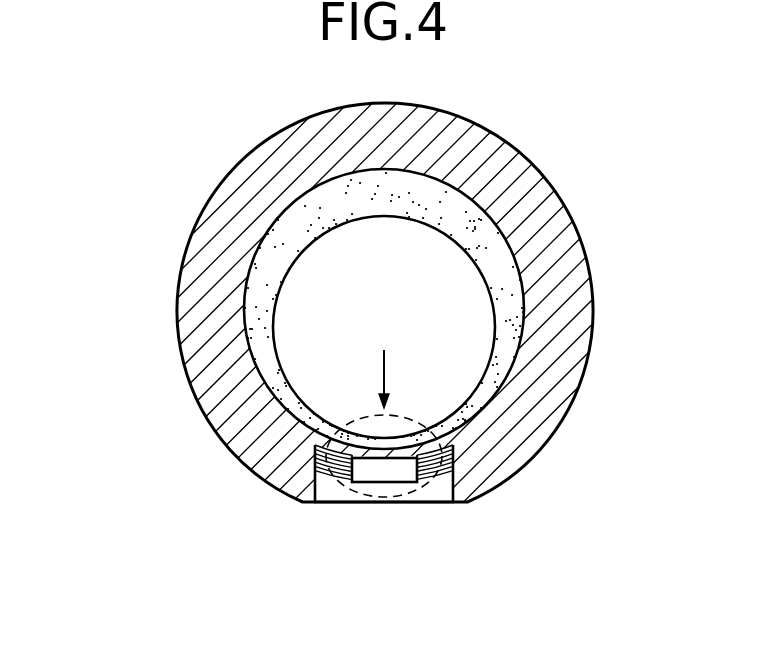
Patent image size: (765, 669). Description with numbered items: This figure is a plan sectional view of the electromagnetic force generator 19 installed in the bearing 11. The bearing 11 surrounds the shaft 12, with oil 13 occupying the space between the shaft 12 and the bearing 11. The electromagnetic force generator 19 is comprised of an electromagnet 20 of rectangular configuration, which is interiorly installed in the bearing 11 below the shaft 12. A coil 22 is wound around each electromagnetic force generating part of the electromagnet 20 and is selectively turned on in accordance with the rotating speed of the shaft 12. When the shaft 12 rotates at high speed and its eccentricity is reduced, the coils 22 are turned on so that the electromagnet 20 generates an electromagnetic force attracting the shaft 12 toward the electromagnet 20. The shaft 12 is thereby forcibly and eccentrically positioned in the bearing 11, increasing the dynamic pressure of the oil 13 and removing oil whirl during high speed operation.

The bearing 11 is at (205, 372).
The shaft 12 is at (313, 373).
The oil 13 is at (260, 303).
The electromagnetic force generator 19 is at (389, 504).
The electromagnet 20 is at (437, 490).
The coil 22 is at (462, 500).